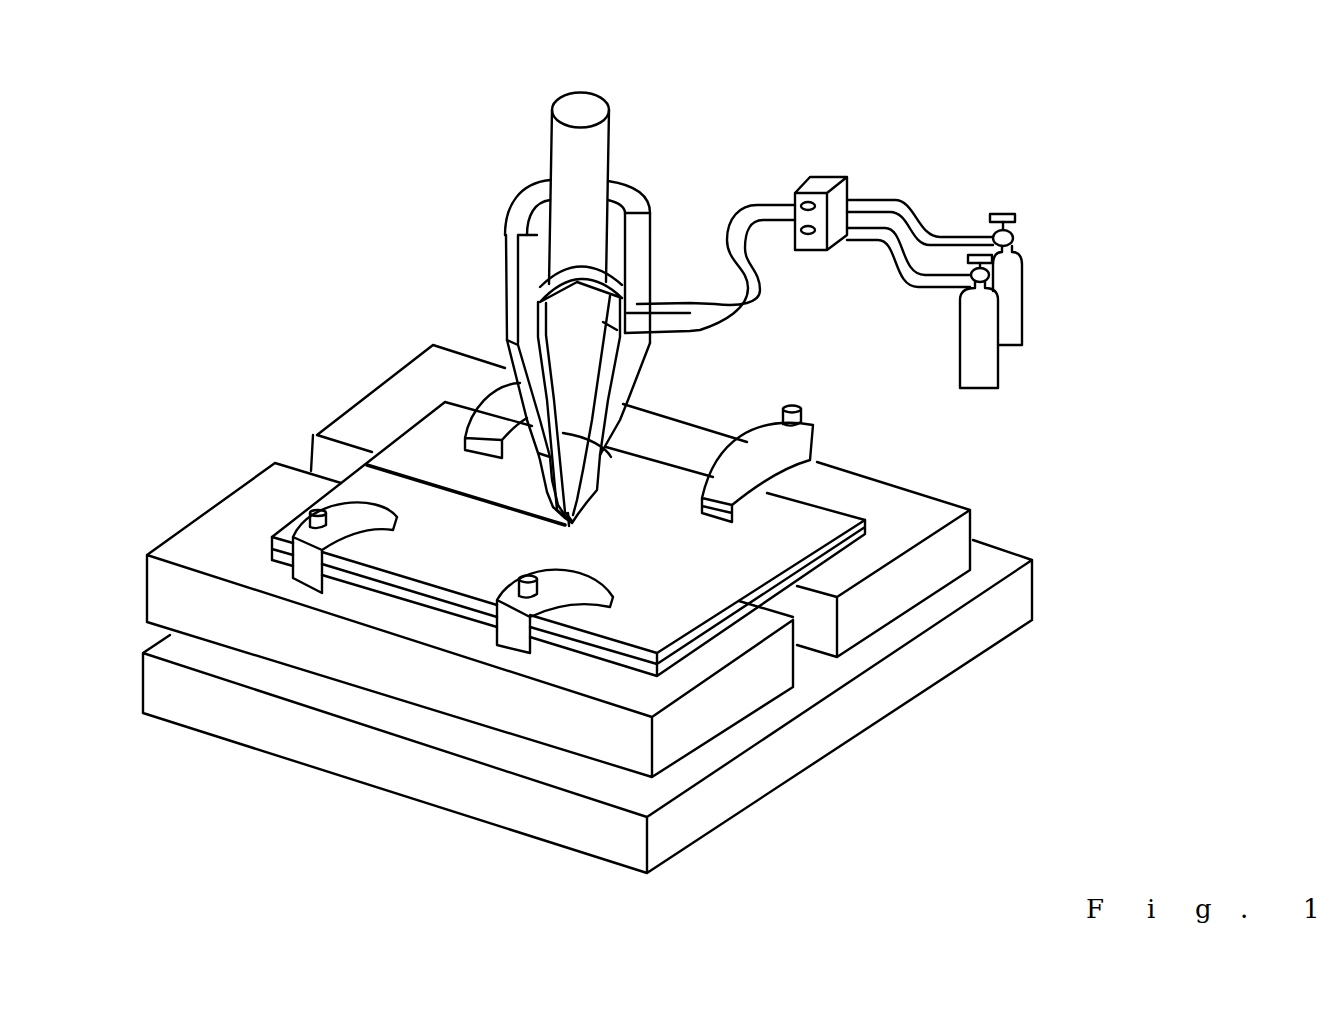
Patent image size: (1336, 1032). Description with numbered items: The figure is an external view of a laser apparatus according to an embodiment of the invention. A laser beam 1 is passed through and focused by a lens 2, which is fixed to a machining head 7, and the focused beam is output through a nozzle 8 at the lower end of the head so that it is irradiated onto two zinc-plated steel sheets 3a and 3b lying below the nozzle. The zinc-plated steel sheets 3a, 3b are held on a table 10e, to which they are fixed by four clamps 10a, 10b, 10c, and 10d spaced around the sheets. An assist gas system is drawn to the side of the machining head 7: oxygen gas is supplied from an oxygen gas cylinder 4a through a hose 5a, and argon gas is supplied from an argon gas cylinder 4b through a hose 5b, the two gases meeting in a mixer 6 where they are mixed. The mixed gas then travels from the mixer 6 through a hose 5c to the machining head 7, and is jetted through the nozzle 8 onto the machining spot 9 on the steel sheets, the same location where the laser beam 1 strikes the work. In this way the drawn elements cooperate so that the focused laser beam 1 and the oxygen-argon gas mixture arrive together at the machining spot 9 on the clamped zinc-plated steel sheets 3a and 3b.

The laser beam 1 is at (610, 125).
The lens 2 is at (605, 272).
The zinc-plated steel sheet 3a is at (820, 520).
The zinc-plated steel sheet 3b is at (863, 533).
The oxygen gas cylinder 4a is at (1007, 370).
The argon gas cylinder 4b is at (1020, 308).
The hose 5a is at (922, 288).
The hose 5b is at (910, 200).
The hose 5c is at (745, 207).
The mixer 6 is at (827, 183).
The machining head 7 is at (520, 257).
The nozzle 8 is at (603, 460).
The machining spot 9 is at (563, 533).
The clamp 10a is at (819, 456).
The clamp 10b is at (532, 653).
The clamp 10c is at (297, 530).
The clamp 10d is at (488, 400).
The table 10e is at (735, 710).